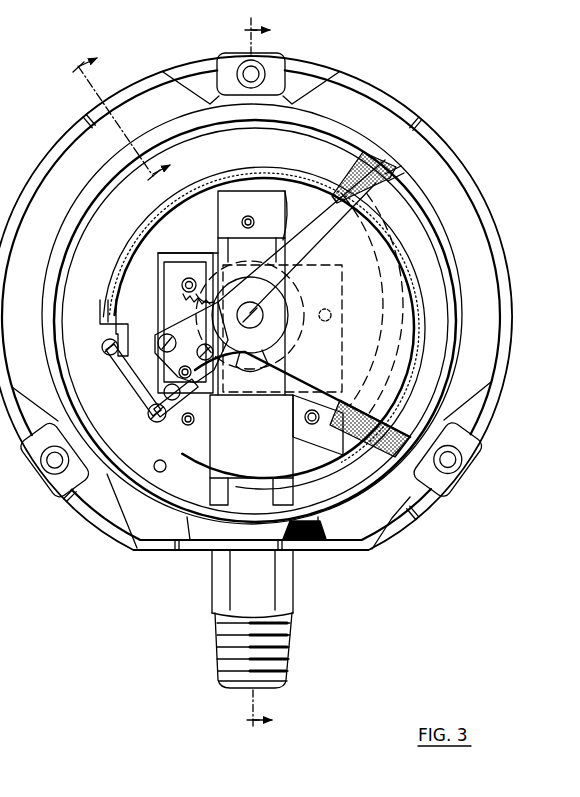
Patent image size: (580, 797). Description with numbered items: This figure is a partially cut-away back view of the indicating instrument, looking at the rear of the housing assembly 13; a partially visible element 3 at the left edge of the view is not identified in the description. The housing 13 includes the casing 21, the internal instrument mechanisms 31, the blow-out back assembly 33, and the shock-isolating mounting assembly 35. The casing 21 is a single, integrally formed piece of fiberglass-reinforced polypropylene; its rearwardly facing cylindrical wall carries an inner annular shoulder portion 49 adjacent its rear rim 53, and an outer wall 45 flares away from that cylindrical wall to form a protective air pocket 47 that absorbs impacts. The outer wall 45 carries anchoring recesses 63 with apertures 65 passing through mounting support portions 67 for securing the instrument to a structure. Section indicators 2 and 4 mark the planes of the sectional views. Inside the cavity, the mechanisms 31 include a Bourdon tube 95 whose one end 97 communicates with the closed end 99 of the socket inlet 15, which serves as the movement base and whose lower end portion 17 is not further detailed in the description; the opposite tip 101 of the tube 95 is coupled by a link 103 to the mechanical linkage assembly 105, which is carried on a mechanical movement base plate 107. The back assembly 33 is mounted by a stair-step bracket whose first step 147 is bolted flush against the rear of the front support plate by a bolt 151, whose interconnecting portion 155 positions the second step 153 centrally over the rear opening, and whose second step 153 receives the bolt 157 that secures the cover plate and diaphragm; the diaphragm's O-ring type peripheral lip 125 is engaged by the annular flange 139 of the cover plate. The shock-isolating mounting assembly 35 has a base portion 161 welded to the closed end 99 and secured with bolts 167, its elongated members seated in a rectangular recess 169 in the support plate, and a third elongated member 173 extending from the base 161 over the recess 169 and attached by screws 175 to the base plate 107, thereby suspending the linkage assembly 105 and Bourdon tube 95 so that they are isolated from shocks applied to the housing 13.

The gauge 3 is at (2, 106).
The housing assembly 13 is at (410, 99).
The socket inlet 15 is at (306, 606).
The threaded portion 17 is at (292, 668).
The casing 21 is at (60, 139).
The internal instrument mechanisms 31 is at (147, 330).
The blow-out back assembly 33 is at (440, 258).
The shock-isolating mounting assembly 35 is at (172, 255).
The outer wall 45 is at (333, 63).
The protective air pocket 47 is at (352, 100).
The inner annular shoulder portion 49 is at (357, 150).
The rear rim 53 is at (380, 162).
The anchoring recess 63 is at (195, 78).
The aperture 65 is at (249, 62).
The mounting support portion 67 is at (228, 68).
The Bourdon tube 95 is at (216, 172).
The one end of the Bourdon tube 97 is at (298, 474).
The closed end of the socket inlet 99 is at (264, 456).
The tip of the Bourdon tube 101 is at (92, 320).
The link 103 is at (101, 370).
The mechanical linkage assembly 105 is at (145, 254).
The mechanical movement base plate 107 is at (208, 274).
The O-ring type peripheral lip 125 is at (392, 170).
The annular flange 139 is at (420, 218).
The first step of the bracket 147 is at (252, 192).
The bolt 151 is at (248, 216).
The second step of the bracket 153 is at (288, 243).
The interconnecting portion of the bracket 155 is at (283, 203).
The bolt 157 is at (264, 310).
The base portion 161 is at (172, 441).
The bolts 167 is at (331, 316).
The rectangular recess 169 is at (156, 235).
The third elongated member 173 is at (216, 268).
The screws 175 is at (258, 370).
The section line 2- 2 is at (267, 374).
The section line 4- 4 is at (128, 112).